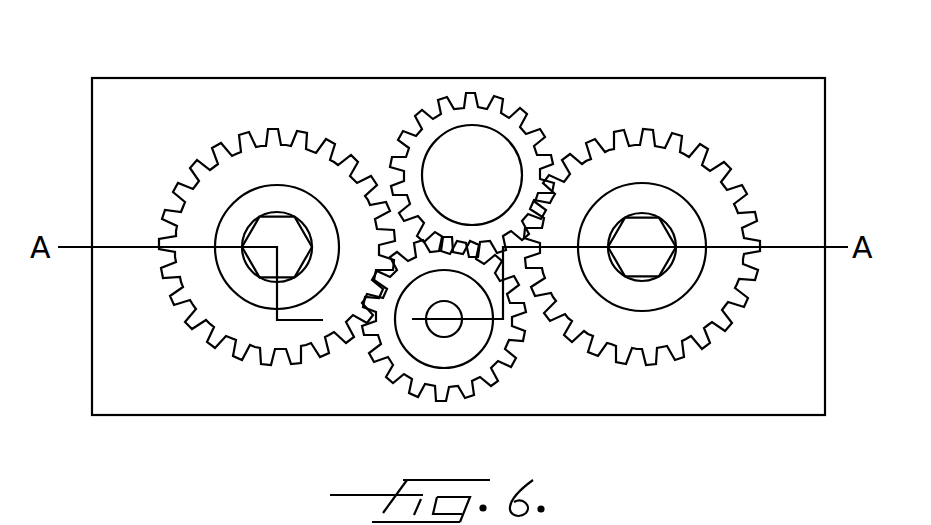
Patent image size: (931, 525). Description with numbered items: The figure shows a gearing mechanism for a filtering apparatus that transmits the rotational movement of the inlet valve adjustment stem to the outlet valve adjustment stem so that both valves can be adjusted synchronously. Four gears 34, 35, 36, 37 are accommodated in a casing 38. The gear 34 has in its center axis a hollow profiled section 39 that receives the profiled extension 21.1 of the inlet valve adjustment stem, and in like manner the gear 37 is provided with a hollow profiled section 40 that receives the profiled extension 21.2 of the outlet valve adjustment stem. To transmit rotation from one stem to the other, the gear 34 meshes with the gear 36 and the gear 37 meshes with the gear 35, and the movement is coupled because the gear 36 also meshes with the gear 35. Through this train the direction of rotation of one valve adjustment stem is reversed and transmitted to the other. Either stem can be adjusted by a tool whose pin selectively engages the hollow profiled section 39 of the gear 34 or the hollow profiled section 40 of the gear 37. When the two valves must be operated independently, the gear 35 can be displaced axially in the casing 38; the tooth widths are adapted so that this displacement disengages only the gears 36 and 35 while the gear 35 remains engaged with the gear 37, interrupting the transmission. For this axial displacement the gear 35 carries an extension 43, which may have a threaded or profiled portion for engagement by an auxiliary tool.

The casing 38 is at (133, 93).
The gear 37 is at (213, 192).
The gear 36 is at (500, 122).
The gear 35 is at (417, 392).
The gear 34 is at (658, 135).
The profiled extension 21.1 is at (655, 230).
The profiled extension 21.2 is at (277, 230).
The hollow profiled section 39 is at (650, 280).
The hollow profiled section 40 is at (247, 267).
The extension 43 is at (453, 337).